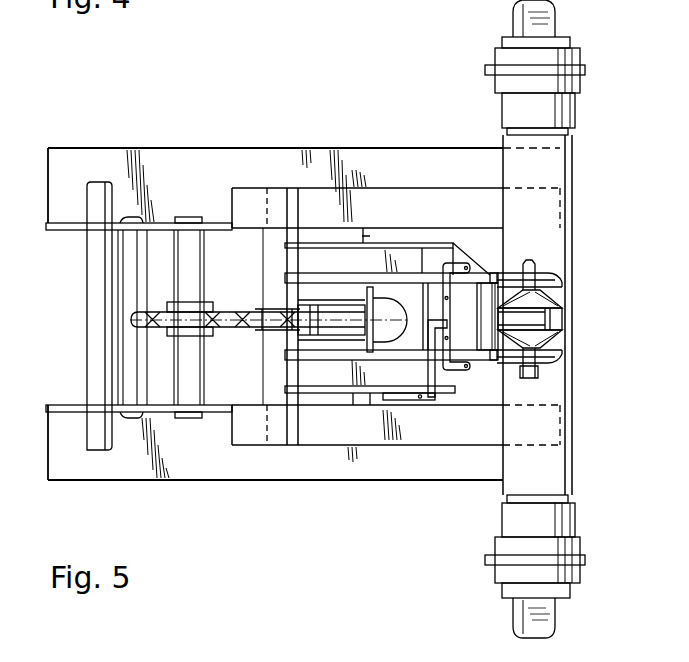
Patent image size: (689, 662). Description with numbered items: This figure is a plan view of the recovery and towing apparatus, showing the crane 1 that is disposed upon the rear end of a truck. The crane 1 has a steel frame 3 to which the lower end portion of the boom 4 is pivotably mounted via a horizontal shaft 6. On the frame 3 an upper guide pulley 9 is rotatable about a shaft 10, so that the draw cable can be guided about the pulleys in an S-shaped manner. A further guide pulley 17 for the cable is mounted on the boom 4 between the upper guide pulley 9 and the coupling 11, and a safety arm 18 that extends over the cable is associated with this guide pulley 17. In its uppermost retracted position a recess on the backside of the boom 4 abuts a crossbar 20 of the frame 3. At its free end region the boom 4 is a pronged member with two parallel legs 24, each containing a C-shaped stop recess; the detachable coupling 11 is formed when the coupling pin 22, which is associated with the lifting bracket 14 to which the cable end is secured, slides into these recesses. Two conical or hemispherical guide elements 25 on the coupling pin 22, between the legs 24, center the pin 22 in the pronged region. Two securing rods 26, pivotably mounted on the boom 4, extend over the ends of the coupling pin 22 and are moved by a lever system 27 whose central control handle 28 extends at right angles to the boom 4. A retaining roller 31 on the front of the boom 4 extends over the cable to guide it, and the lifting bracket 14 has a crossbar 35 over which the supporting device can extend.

The crane 1 is at (113, 140).
The frame 3 is at (121, 470).
The boom 4 is at (407, 256).
The shaft 6 is at (367, 240).
The upper guide pulley 9 is at (226, 312).
The shaft 10 is at (185, 217).
The coupling 11 is at (573, 286).
The lifting bracket 14 is at (573, 172).
The guide pulley 17 is at (290, 312).
The safety arm 18 is at (320, 305).
The crossbar 20 is at (272, 352).
The coupling pin 22 is at (528, 378).
The legs 24 is at (550, 284).
The guide elements 25 is at (562, 300).
The securing rods 26 is at (510, 275).
The lever system 27 is at (460, 263).
The control handle 28 is at (433, 398).
The retaining roller 31 is at (487, 350).
The crossbar 35 is at (567, 420).